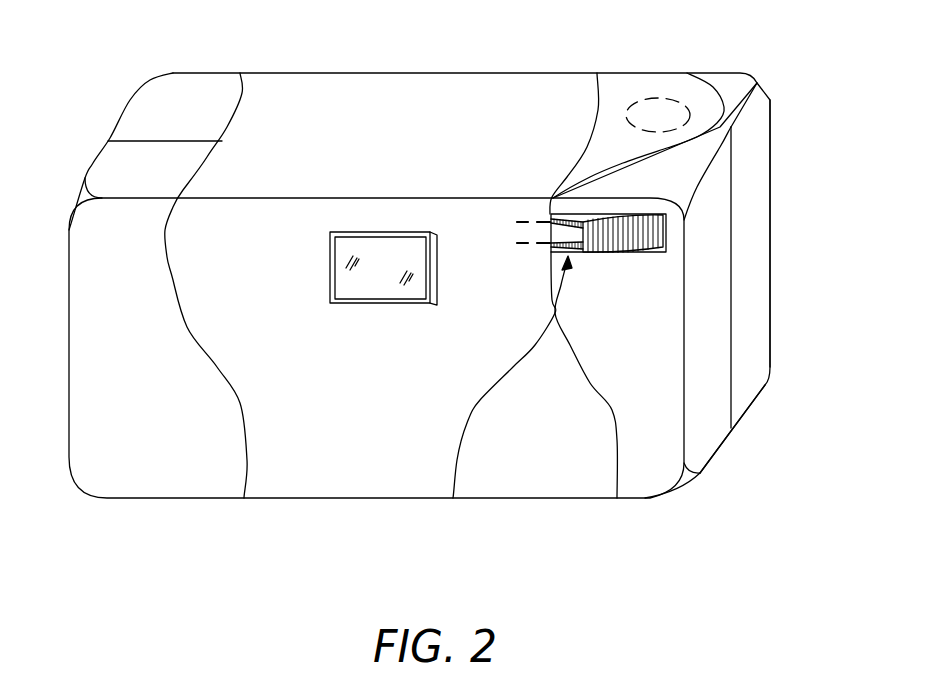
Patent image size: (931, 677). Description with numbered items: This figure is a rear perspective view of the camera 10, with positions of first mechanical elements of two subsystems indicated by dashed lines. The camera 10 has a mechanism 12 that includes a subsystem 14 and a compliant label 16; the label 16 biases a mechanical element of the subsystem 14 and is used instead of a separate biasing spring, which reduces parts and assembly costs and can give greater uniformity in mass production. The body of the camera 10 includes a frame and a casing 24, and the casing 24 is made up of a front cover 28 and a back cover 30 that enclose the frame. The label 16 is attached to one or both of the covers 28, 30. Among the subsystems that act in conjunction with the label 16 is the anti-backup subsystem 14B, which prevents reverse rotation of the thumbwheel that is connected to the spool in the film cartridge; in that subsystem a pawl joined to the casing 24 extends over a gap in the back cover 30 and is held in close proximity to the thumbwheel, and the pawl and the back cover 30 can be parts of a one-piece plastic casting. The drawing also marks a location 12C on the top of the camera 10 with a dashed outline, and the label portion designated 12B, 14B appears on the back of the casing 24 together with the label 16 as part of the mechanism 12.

The camera 10 is at (793, 241).
The mechanism 12 is at (376, 335).
The camera body shell 12B is at (376, 335).
The shutter release button location 12C is at (664, 88).
The subsystem 14 is at (498, 310).
The anti-backup subsystem 14B is at (468, 430).
The compliant label 16 is at (387, 452).
The casing 24 is at (781, 283).
The front cover 28 is at (753, 408).
The back cover 30 is at (717, 455).